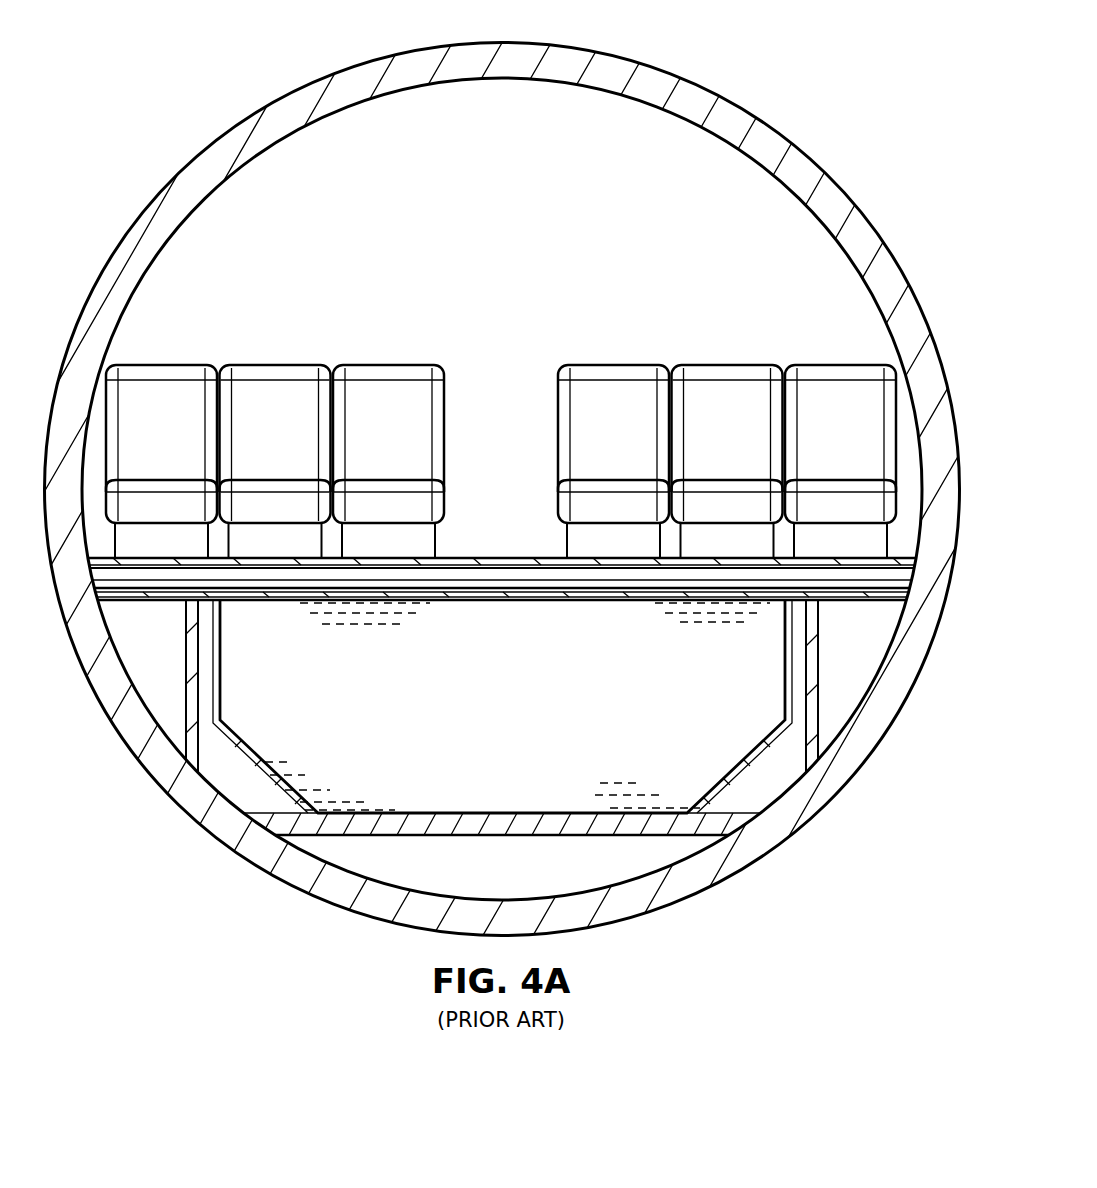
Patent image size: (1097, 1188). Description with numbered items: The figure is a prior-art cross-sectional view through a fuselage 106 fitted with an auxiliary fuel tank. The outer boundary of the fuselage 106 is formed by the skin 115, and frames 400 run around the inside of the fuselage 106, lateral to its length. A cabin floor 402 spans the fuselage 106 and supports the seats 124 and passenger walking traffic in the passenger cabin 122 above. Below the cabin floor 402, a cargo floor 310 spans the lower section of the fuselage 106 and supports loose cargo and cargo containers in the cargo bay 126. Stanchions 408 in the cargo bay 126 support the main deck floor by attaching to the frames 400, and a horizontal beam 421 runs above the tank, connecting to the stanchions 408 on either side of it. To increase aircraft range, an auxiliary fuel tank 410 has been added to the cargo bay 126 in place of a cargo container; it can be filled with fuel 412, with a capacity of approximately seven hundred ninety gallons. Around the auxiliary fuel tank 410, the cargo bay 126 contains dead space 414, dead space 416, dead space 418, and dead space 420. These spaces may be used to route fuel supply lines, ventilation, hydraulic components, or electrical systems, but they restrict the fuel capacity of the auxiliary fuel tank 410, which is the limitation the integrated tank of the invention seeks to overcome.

The fuselage 106 is at (717, 58).
The skin 115 is at (774, 129).
The frames 400 is at (781, 183).
The passenger cabin 122 is at (523, 247).
The seats 124 is at (295, 328).
The cabin floor 402 is at (518, 556).
The horizontal beam 421 is at (574, 578).
The fuel 412 is at (522, 722).
The dead space 414 is at (165, 632).
The dead space 420 is at (880, 632).
The stanchions 408 is at (200, 655).
The cargo bay 126 is at (162, 703).
The auxiliary fuel tank 410 is at (203, 777).
The dead space 416 is at (246, 792).
The dead space 418 is at (782, 771).
The cargo floor 310 is at (510, 838).